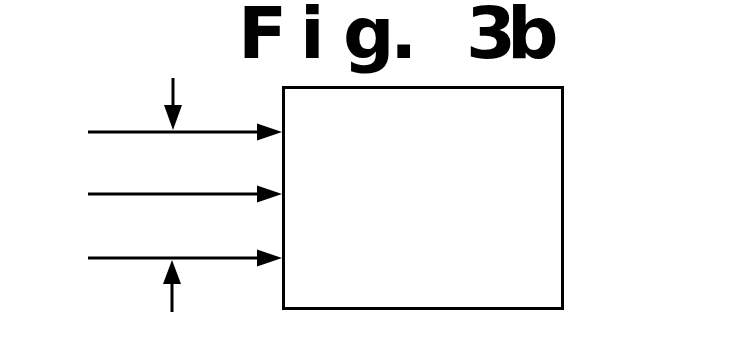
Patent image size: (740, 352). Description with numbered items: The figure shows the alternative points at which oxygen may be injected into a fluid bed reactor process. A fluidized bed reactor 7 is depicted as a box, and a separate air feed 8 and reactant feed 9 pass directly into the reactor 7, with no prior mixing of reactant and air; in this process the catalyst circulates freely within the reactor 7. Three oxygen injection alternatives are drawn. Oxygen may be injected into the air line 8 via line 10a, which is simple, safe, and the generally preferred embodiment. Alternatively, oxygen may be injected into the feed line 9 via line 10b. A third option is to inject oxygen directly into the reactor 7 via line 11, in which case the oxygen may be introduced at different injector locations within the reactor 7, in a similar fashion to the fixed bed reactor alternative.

The fluidized bed reactor 7 is at (564, 131).
The air feed 8 is at (173, 134).
The oxygen injection line into reactor 11 is at (170, 195).
The reactant feed 9 is at (172, 260).
The oxygen injection line into air line 10a is at (177, 91).
The oxygen injection line into feed line 10b is at (176, 304).